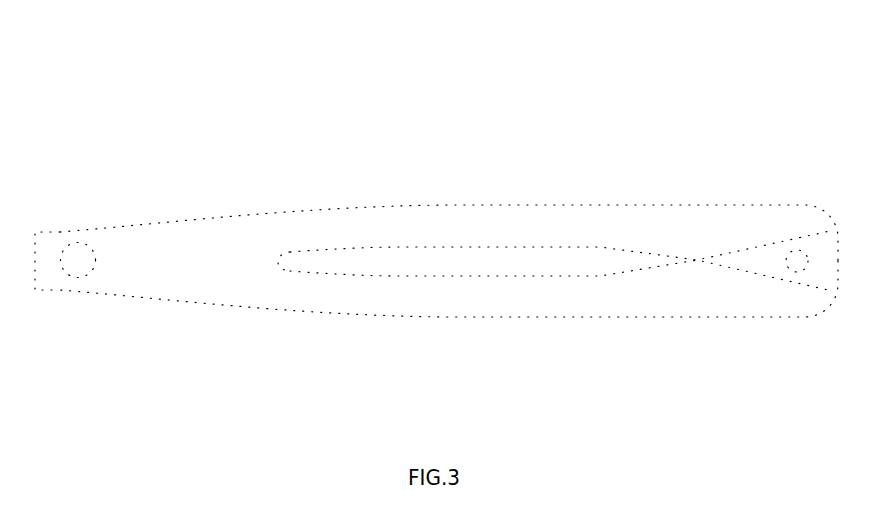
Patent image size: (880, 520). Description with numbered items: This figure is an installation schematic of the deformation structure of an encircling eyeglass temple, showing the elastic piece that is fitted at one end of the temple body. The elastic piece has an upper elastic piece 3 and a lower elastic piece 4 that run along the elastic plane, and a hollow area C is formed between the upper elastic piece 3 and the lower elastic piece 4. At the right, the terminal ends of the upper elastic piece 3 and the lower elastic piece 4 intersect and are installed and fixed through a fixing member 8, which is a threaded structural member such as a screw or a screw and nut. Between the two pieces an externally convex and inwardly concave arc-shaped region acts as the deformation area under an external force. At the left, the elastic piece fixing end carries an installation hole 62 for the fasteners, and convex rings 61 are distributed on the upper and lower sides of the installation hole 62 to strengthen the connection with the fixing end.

The upper elastic piece 3 is at (497, 200).
The lower elastic piece 4 is at (483, 317).
The convex rings 61 is at (70, 230).
The installation hole 62 is at (80, 287).
The hollow area C is at (540, 262).
The fixing member 8 is at (790, 250).